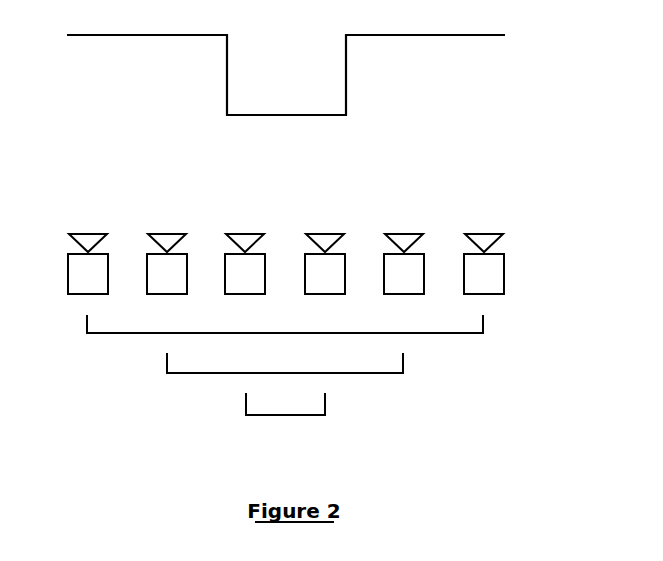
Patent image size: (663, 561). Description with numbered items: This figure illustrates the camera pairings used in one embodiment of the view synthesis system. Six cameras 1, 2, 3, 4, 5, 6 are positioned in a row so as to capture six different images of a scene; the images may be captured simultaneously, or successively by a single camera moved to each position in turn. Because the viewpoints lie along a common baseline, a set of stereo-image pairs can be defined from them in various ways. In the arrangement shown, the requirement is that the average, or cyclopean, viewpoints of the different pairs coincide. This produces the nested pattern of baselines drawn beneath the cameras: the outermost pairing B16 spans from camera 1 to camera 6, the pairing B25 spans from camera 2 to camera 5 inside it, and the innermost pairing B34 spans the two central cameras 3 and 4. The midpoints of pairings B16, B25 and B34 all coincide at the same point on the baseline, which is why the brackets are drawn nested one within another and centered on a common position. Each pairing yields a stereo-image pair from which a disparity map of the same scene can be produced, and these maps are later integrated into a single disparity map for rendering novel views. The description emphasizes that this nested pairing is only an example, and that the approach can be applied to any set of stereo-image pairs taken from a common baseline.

The camera 1 is at (88, 264).
The camera 2 is at (167, 264).
The camera 3 is at (245, 264).
The camera 4 is at (325, 264).
The camera 5 is at (404, 264).
The camera 6 is at (484, 264).
The pairing B16 is at (304, 347).
The pairing B25 is at (302, 386).
The pairing B34 is at (305, 424).